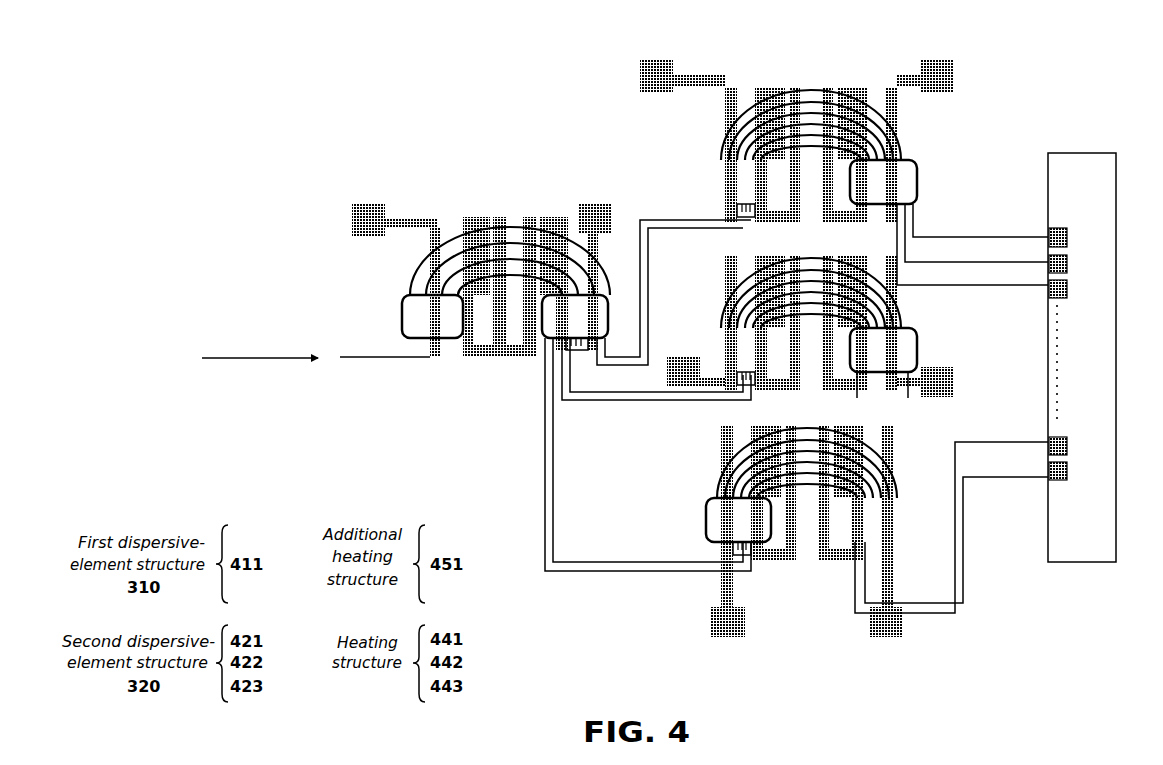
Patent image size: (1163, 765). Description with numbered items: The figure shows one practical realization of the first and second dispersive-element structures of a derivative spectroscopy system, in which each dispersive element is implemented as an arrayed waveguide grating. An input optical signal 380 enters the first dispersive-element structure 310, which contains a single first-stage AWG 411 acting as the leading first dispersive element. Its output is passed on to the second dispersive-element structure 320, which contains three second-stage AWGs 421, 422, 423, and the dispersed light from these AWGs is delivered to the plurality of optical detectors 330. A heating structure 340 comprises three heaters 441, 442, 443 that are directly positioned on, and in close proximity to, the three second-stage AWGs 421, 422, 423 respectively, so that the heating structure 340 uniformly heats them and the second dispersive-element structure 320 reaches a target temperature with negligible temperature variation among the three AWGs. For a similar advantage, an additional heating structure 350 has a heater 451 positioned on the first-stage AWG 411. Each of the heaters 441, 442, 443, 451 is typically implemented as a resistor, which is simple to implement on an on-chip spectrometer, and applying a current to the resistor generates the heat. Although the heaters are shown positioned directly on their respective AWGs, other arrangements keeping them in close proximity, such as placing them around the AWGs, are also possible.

The first dispersive-element structure 310 is at (422, 335).
The second dispersive-element structure 320 is at (900, 343).
The optical detectors 330 is at (1098, 545).
The heating structure 340 is at (626, 365).
The additional heating structure 350 is at (430, 453).
The input optical signal 380 is at (232, 359).
The first-stage AWG 411 is at (410, 321).
The second-stage AWG 421 is at (913, 183).
The second-stage AWG 422 is at (913, 351).
The second-stage AWG 423 is at (708, 517).
The heater 441 is at (797, 85).
The heater 442 is at (818, 274).
The heater 443 is at (788, 552).
The heater 451 is at (486, 352).